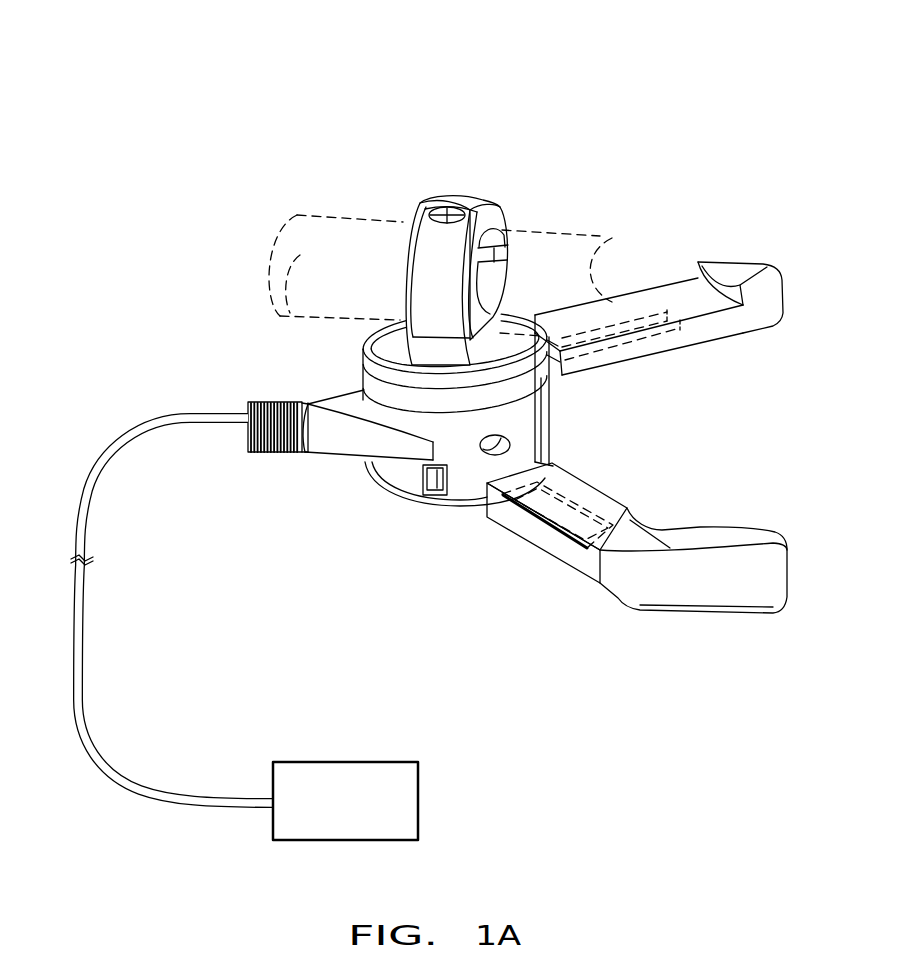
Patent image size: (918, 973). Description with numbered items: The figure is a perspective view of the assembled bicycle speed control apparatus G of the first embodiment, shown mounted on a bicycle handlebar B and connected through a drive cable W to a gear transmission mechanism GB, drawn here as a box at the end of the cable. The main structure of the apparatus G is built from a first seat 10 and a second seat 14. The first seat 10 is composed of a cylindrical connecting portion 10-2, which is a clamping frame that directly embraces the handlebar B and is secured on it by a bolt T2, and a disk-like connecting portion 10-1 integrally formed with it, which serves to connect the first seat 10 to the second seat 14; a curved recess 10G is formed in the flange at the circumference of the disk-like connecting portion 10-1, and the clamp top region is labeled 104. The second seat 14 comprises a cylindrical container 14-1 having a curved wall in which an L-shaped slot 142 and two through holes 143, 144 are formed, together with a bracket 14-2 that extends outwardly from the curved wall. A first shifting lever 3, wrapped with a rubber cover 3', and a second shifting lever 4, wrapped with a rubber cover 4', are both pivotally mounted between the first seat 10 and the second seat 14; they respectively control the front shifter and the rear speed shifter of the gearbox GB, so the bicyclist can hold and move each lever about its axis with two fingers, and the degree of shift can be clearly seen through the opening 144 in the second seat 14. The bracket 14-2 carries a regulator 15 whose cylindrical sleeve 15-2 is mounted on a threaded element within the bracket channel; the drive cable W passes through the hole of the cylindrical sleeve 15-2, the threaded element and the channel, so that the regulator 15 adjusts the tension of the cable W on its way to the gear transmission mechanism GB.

The bicycle speed control apparatus G is at (153, 80).
The first seat 10 is at (190, 310).
The disk-like connecting portion 10-1 is at (361, 378).
The cylindrical connecting portion 10-2 is at (400, 287).
The clamp top portion 104 is at (425, 201).
The bolt T2 is at (457, 200).
The bicycle handlebar B is at (599, 227).
The second shifting lever 4 is at (674, 297).
The rubber cover 4' is at (730, 258).
The curved recess 10G is at (538, 368).
The L-shaped slot 142 is at (543, 390).
The through hole 143 is at (508, 442).
The opening 144 is at (446, 495).
The first shifting lever 3 is at (637, 578).
The rubber cover 3' is at (685, 603).
The second seat 14 is at (279, 518).
The cylindrical container 14-1 is at (400, 517).
The bracket 14-2 is at (323, 472).
The regulator 15 is at (240, 391).
The cylindrical sleeve 15-2 is at (253, 448).
The drive cable W is at (111, 428).
The gear transmission mechanism GB is at (345, 801).